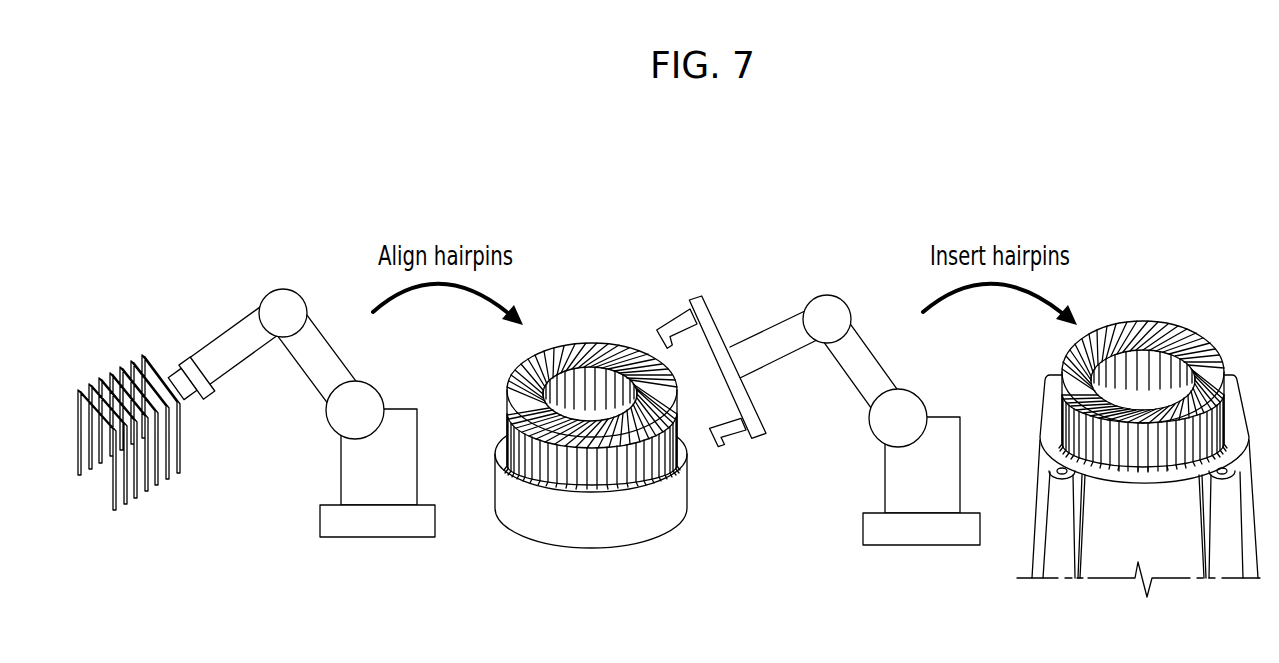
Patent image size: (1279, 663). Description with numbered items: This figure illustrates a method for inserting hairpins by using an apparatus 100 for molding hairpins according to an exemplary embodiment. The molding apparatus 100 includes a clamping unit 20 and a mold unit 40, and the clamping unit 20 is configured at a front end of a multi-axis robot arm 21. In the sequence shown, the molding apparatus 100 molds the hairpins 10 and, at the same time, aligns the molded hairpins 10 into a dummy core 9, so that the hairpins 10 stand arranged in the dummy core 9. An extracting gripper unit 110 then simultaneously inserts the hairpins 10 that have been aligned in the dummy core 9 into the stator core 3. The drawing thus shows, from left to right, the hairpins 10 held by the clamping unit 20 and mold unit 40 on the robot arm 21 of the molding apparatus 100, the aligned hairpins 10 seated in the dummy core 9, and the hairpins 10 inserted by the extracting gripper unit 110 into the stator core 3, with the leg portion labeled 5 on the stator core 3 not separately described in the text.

The stator core 3 is at (1110, 557).
The hairpin legs 5 is at (1148, 473).
The dummy core 9 is at (608, 530).
The hairpins 10 is at (110, 358).
The clamping unit 20 is at (178, 358).
The multi-axis robot arm 21 is at (232, 340).
The mold unit 40 is at (189, 399).
The apparatus for molding hairpins 100 is at (296, 375).
The extracting gripper unit 110 is at (851, 281).